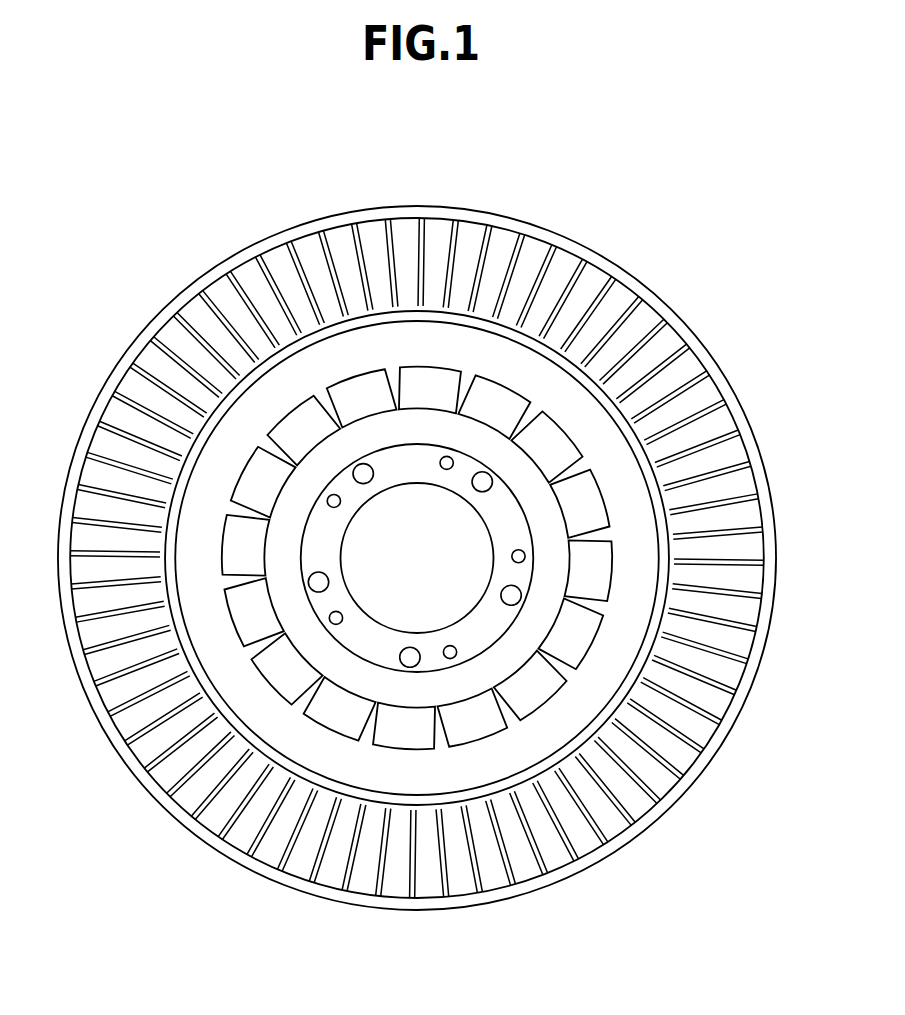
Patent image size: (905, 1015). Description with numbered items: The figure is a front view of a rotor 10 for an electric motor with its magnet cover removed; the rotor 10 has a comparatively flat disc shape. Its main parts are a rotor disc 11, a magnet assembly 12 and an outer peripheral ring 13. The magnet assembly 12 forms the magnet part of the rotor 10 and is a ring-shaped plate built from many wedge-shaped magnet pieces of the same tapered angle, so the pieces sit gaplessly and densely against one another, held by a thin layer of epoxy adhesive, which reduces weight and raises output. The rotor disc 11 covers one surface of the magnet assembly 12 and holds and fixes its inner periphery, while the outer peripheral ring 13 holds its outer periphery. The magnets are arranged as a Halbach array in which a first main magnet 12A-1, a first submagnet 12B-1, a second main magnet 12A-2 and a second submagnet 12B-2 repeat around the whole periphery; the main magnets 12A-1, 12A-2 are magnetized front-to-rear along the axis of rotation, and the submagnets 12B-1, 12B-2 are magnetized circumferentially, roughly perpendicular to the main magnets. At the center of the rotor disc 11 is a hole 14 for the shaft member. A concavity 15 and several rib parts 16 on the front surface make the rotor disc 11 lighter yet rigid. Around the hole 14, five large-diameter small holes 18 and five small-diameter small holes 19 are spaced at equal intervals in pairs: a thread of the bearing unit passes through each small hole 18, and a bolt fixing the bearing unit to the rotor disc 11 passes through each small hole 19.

The rotor 10 is at (650, 272).
The rotor disc 11 is at (362, 347).
The magnet assembly 12 is at (435, 250).
The outer peripheral ring 13 is at (533, 222).
The hole 14 is at (342, 542).
The concavity 15 is at (288, 427).
The rib parts 16 is at (267, 517).
The large-diameter small hole 18 is at (361, 465).
The small-diameter small hole 19 is at (335, 492).
The first main magnet 12A-1 is at (523, 870).
The second main magnet 12A-2 is at (590, 842).
The first submagnet 12B-1 is at (560, 862).
The second submagnet 12B-2 is at (612, 829).